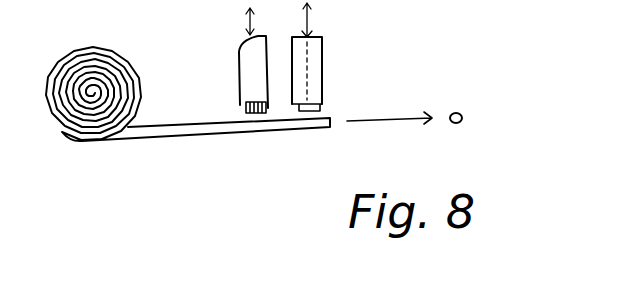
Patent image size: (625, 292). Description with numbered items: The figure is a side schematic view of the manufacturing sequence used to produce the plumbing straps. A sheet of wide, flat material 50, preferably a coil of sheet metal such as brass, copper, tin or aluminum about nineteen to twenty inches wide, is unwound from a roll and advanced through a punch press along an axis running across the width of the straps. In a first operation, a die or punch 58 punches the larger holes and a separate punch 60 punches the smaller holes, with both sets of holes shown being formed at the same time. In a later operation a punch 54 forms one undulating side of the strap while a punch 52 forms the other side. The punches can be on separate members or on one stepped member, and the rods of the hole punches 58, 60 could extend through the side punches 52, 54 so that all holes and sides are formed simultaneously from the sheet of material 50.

The sheet of wide, flat material 50 is at (158, 124).
The punch 52 is at (323, 103).
The punch 54 is at (298, 111).
The die or punch 58 is at (243, 118).
The punch 60 is at (258, 112).